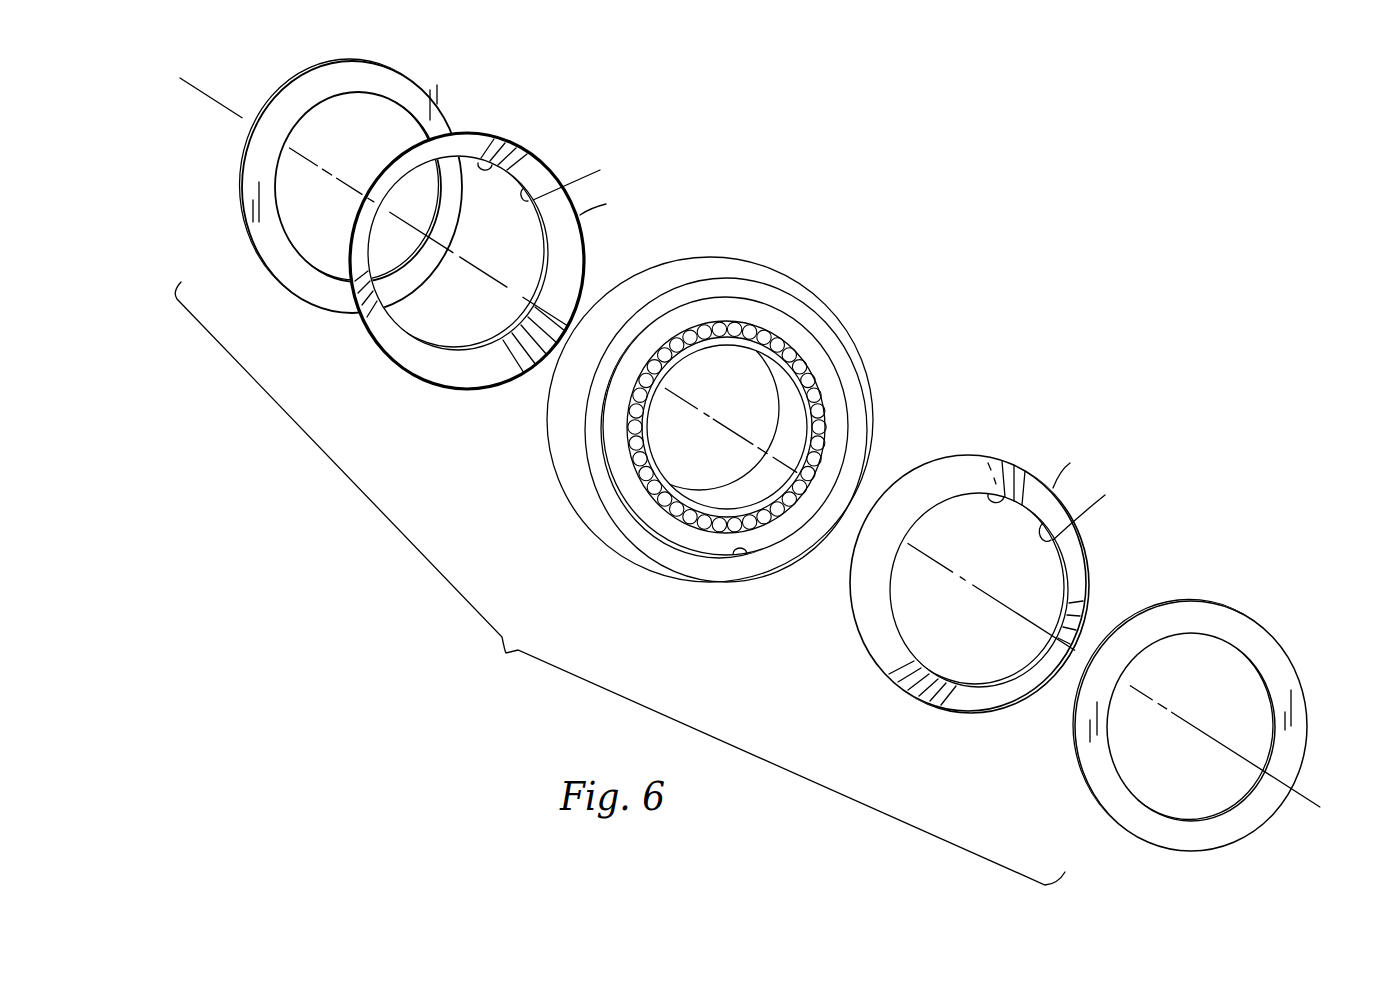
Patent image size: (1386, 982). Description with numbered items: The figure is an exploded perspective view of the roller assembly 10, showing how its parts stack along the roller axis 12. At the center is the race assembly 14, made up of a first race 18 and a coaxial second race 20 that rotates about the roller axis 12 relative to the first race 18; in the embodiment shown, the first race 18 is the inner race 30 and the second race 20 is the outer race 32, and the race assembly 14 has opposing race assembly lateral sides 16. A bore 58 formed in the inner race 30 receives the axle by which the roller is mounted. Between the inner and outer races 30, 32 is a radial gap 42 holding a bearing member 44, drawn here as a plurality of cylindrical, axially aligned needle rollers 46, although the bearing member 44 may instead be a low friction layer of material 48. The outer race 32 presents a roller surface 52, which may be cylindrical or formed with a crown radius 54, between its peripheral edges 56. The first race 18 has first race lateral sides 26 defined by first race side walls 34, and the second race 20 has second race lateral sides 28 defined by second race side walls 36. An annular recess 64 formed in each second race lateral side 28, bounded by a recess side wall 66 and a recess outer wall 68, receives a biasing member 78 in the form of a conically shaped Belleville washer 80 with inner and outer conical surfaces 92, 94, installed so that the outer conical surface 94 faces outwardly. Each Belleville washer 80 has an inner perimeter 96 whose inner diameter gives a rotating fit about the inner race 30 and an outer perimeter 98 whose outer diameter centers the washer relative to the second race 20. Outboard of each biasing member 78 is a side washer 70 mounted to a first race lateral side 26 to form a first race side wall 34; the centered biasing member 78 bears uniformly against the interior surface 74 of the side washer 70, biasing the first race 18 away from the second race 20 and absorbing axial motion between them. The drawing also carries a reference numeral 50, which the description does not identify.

The roller assembly 10 is at (620, 583).
The roller axis 12 is at (1320, 808).
The race assembly 14 is at (741, 420).
The race assembly lateral sides 16 is at (670, 421).
The first race 18 is at (755, 466).
The second race 20 is at (668, 436).
The first race lateral sides 26 is at (755, 466).
The second race lateral sides 28 is at (668, 436).
The inner race 30 is at (755, 466).
The outer race 32 is at (668, 436).
The first race side walls 34 is at (774, 455).
The second race side walls 36 is at (682, 260).
The radial gap 42 is at (755, 466).
The bearing member 44 is at (755, 466).
The needle rollers 46 is at (755, 466).
The low friction layer of material 48 is at (827, 409).
The inner ring 50 is at (750, 498).
The roller surface 52 is at (670, 421).
The crown radius 54 is at (670, 421).
The peripheral edges 56 is at (608, 503).
The bore 58 is at (703, 497).
The annular recess 64 is at (755, 466).
The recess side wall 66 is at (700, 545).
The recess outer wall 68 is at (740, 558).
The side washers 70 is at (774, 455).
The interior surface 74 is at (295, 290).
The biasing member 78 is at (739, 410).
The Belleville washer 80 is at (739, 410).
The inner conical surface 92 is at (422, 367).
The outer conical surface 94 is at (878, 653).
The inner perimeter 96 is at (490, 167).
The outer perimeter 98 is at (739, 410).